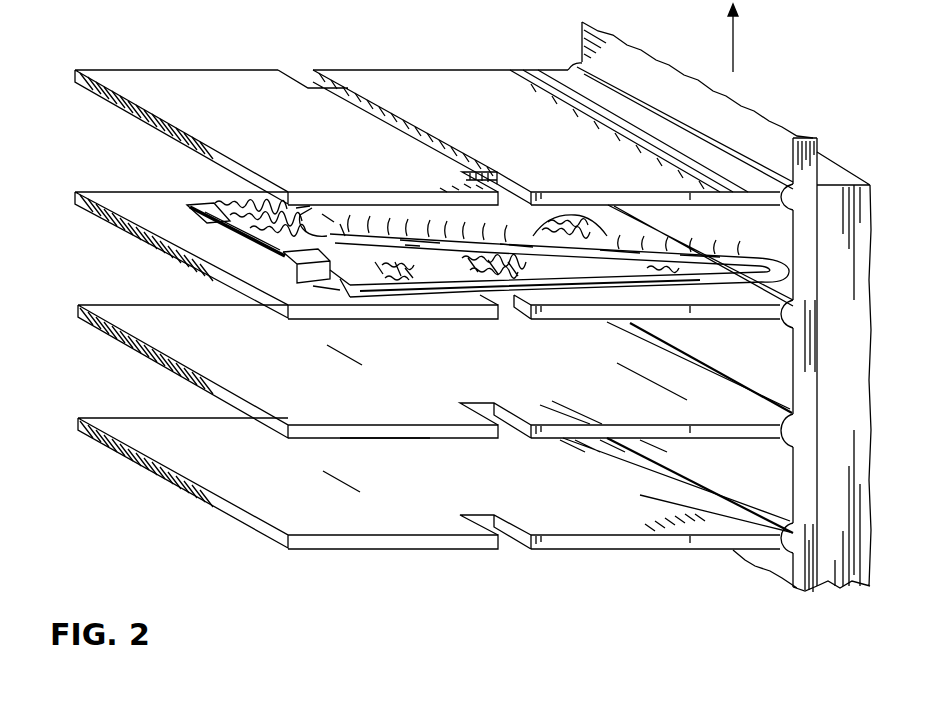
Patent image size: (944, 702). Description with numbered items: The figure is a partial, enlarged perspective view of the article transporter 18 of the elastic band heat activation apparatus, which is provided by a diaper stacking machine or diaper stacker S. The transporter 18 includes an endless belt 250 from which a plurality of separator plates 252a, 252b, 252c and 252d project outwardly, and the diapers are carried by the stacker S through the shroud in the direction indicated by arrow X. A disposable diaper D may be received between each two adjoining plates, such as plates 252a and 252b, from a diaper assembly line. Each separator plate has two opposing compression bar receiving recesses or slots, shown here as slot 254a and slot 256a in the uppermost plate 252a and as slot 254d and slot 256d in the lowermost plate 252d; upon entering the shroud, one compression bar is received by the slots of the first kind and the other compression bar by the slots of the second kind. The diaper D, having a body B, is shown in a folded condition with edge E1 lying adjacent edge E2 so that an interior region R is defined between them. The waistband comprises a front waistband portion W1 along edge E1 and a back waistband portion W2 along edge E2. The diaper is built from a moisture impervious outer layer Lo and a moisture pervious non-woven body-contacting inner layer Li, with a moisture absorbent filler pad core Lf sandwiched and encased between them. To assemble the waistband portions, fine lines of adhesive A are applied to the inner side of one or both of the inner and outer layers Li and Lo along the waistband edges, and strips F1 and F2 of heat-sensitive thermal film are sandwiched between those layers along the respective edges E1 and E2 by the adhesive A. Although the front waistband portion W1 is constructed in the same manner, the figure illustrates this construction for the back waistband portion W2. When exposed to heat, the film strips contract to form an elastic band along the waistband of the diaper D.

The article transporter 18 is at (418, 580).
The separator plate 252a is at (210, 83).
The separator plate 252b is at (160, 223).
The separator plate 252c is at (208, 358).
The separator plate 252d is at (237, 492).
The compression bar receiving slot 254a is at (300, 86).
The compression bar receiving slot 254d is at (383, 438).
The compression bar receiving slot 256a is at (498, 170).
The compression bar receiving slot 256d is at (515, 536).
The endless belt 250 is at (788, 563).
The diaper stacker S is at (834, 553).
The direction arrow X is at (733, 48).
The front waistband portion W1 is at (345, 208).
The back waistband portion W2 is at (215, 207).
The edge E1 is at (293, 205).
The edge E2 is at (187, 204).
The thermal film strip F1 is at (327, 212).
The thermal film strip F2 is at (287, 259).
The disposable diaper D is at (423, 210).
The interior region R is at (408, 247).
The adhesive lines A is at (313, 287).
The diaper body B is at (681, 232).
The outer layer Lo is at (519, 214).
The filler pad core Lf is at (560, 218).
The inner layer Li is at (603, 240).